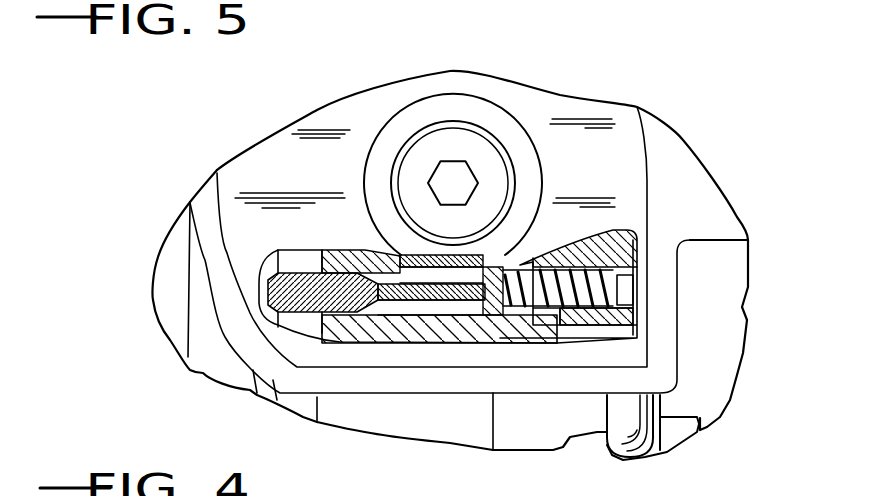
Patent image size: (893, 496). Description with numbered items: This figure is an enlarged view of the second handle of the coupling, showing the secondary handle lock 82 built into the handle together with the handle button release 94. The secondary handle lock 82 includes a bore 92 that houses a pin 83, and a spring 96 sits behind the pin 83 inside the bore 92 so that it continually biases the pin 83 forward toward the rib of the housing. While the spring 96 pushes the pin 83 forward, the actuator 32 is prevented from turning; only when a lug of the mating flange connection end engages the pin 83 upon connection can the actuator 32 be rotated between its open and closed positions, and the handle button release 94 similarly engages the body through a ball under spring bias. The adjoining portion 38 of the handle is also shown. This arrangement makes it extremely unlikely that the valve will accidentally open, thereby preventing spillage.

The actuator 32 is at (405, 257).
The jaw arm portion 38 is at (717, 240).
The secondary handle lock 82 is at (352, 310).
The pin 83 is at (268, 295).
The bore 92 is at (480, 254).
The handle button release 94 is at (600, 432).
The spring 96 is at (553, 253).